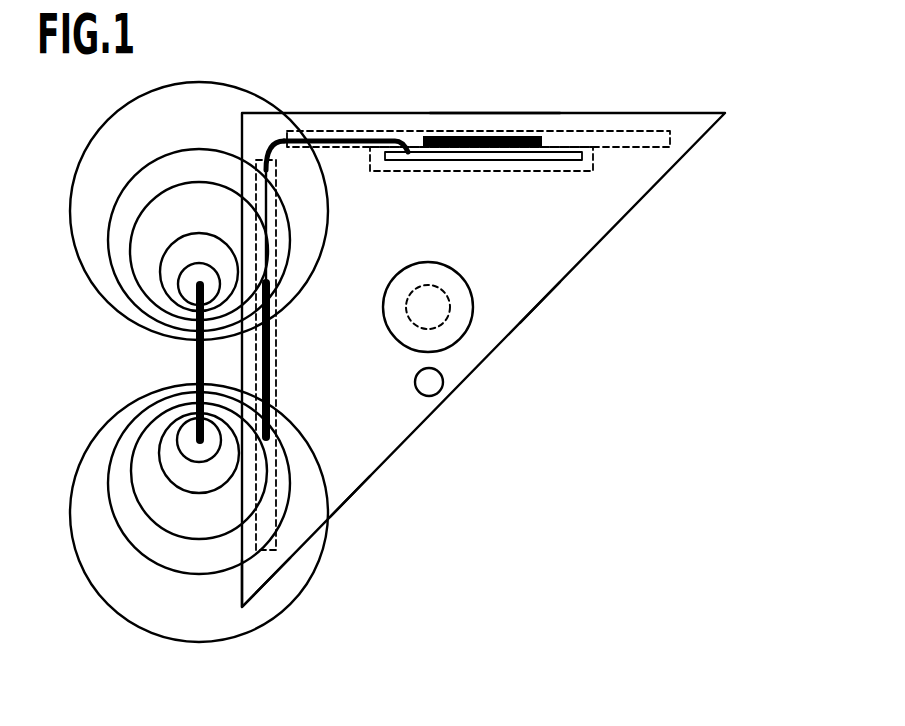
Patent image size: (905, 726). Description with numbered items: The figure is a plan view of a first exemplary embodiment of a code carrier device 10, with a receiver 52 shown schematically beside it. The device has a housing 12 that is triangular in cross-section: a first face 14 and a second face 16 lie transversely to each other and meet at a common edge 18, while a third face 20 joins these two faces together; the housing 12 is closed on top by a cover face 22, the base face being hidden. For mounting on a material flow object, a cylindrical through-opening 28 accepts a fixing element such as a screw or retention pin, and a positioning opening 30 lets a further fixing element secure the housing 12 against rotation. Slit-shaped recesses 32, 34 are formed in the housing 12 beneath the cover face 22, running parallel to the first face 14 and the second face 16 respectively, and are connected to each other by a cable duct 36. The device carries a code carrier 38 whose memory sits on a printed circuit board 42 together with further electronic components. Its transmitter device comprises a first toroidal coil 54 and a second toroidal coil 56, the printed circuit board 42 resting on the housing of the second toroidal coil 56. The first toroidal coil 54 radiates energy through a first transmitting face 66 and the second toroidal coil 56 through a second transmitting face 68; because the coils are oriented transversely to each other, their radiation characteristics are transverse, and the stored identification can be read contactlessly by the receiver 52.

The code carrier device 10 is at (676, 98).
The housing 12 is at (578, 237).
The first face 14 is at (243, 579).
The second face 16 is at (500, 113).
The common edge 18 is at (288, 130).
The third face 20 is at (537, 305).
The cover face 22 is at (343, 480).
The cylindrical through-opening 28 is at (437, 323).
The positioning opening 30 is at (437, 392).
The slit-shaped recess 32 is at (280, 560).
The slit-shaped recess 34 is at (372, 140).
The cable duct 36 is at (262, 140).
The code carrier 38 is at (555, 118).
The printed circuit board 42 is at (582, 153).
The receiver 52 is at (197, 365).
The first toroidal coil 54 is at (272, 348).
The second toroidal coil 56 is at (433, 150).
The first transmitting face 66 is at (276, 396).
The second transmitting face 68 is at (464, 121).